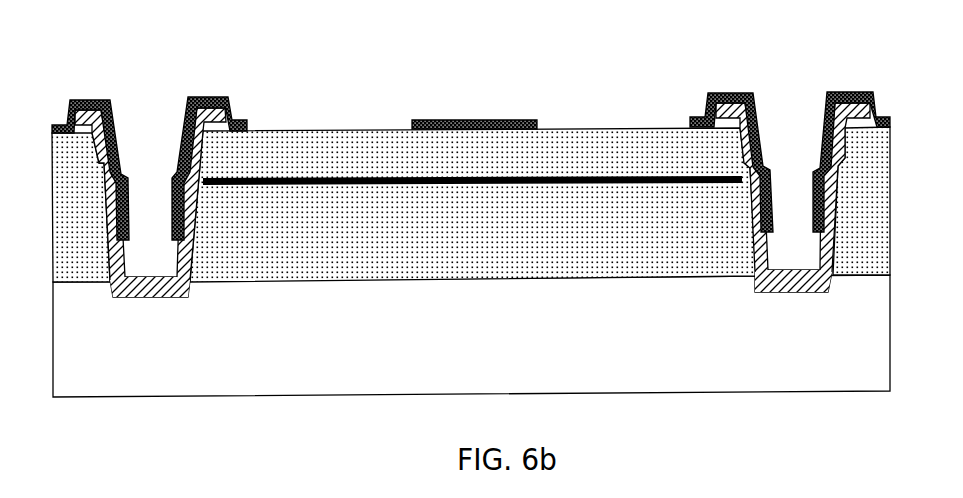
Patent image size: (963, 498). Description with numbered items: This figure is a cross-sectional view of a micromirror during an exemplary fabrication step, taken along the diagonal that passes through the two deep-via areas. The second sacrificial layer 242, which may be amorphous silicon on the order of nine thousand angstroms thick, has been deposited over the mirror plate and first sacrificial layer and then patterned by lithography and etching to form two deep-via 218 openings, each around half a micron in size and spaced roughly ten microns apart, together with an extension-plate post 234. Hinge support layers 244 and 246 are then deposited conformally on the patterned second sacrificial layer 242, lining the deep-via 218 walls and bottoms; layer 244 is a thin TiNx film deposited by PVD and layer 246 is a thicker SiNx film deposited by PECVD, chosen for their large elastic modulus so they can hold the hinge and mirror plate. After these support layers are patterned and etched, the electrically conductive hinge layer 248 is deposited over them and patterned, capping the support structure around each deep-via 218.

The deep-via 218 is at (152, 93).
The extension-plate post 234 is at (443, 121).
The second sacrificial layer 242 is at (312, 132).
The hinge support layer 244 is at (233, 124).
The hinge support layer 246 is at (143, 298).
The hinge layer 248 is at (200, 97).